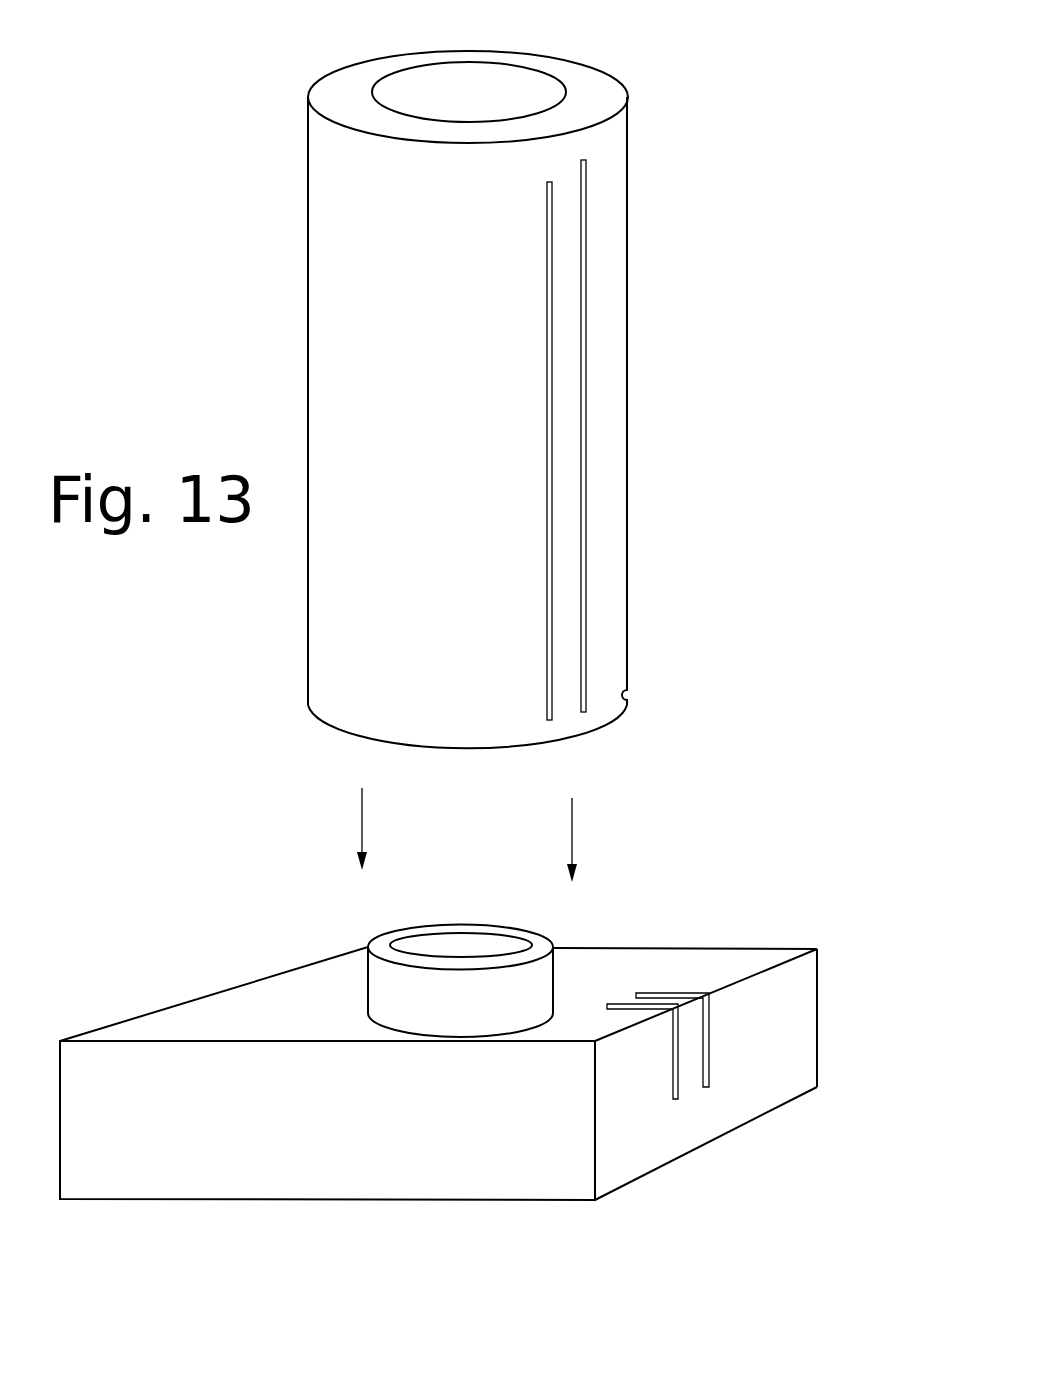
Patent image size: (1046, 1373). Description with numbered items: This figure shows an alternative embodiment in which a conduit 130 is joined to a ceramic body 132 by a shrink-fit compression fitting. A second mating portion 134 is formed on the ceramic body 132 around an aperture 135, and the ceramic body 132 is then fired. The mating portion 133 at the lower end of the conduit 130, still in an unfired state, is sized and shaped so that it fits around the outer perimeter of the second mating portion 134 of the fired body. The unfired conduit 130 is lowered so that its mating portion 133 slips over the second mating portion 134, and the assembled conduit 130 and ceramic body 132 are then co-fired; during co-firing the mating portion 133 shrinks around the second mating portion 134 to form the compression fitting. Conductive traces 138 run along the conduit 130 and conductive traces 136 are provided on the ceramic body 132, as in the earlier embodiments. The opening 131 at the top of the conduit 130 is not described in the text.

The conduit 130 is at (714, 266).
The central bore of roller 131 is at (555, 105).
The ceramic body 132 is at (749, 912).
The mating portion 133 is at (340, 723).
The second mating portion 134 is at (553, 982).
The aperture 135 is at (476, 900).
The conductive traces 136 is at (679, 1073).
The conductive traces 138 is at (552, 445).